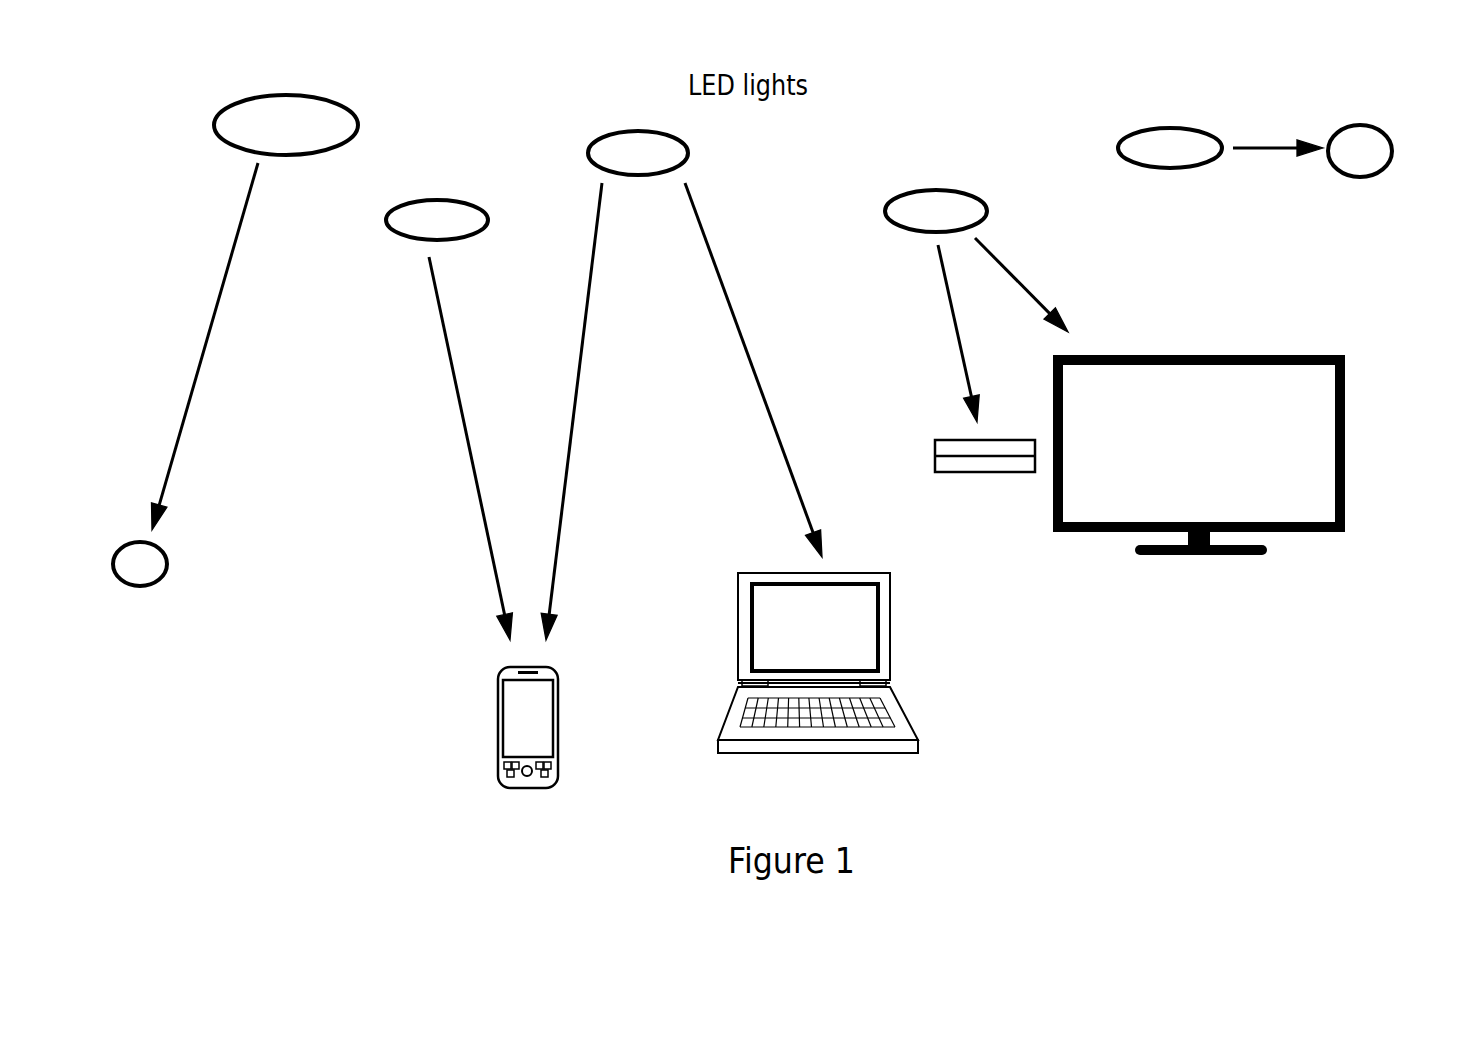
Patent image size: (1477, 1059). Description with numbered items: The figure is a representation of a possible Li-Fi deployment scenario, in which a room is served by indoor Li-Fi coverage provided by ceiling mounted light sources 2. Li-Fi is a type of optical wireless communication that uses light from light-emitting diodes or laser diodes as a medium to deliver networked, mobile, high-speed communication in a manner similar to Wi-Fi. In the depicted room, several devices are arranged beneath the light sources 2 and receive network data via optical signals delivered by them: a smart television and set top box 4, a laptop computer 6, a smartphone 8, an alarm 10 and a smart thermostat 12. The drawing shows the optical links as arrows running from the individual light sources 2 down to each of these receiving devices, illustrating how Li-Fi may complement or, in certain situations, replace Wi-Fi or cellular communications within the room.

The light sources 2 is at (317, 97).
The smart television and set top box 4 is at (1255, 352).
The laptop computer 6 is at (878, 572).
The smartphone 8 is at (553, 668).
The alarm 10 is at (1360, 125).
The smart thermostat 12 is at (162, 552).